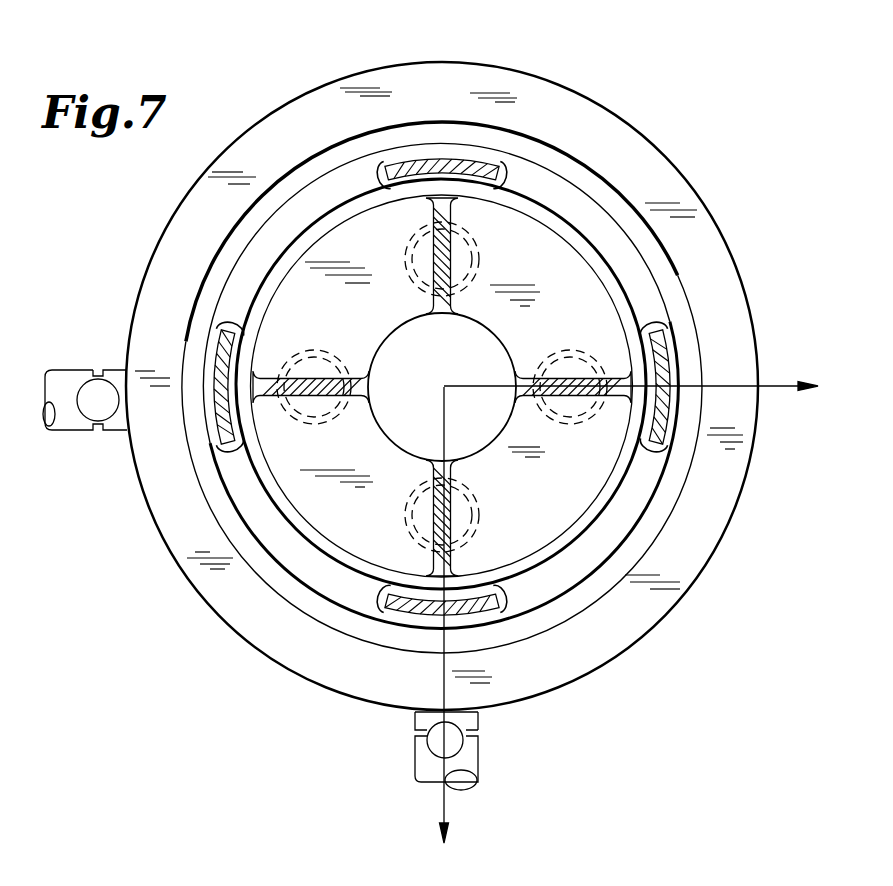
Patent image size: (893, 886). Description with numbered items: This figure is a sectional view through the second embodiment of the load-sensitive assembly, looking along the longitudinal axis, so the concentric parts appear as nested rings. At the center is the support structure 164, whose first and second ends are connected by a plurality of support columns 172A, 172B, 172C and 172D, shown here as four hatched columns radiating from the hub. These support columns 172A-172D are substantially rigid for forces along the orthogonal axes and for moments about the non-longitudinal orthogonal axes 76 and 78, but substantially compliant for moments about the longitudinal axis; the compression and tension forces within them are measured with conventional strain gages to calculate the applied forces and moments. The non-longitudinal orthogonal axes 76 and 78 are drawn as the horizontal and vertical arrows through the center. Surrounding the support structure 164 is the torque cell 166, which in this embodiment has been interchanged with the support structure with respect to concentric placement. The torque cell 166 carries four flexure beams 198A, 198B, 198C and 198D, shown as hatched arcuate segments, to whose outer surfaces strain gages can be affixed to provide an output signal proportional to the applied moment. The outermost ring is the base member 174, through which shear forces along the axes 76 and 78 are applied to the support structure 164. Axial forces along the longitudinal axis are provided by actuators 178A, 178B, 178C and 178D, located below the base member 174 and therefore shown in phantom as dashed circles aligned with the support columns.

The base member 174 is at (442, 369).
The torque cell 166 is at (442, 356).
The support structure 164 is at (583, 237).
The support column 172A is at (201, 322).
The support column 172B is at (366, 611).
The support column 172C is at (666, 457).
The support column 172D is at (502, 162).
The flexure beam 198A is at (134, 429).
The flexure beam 198B is at (495, 671).
The flexure beam 198C is at (736, 357).
The flexure beam 198D is at (442, 94).
The actuator 178A is at (219, 290).
The actuator 178B is at (320, 605).
The actuator 178C is at (665, 297).
The actuator 178D is at (533, 172).
The non-longitudinal orthogonal axis 76 is at (631, 360).
The non-longitudinal orthogonal axis 78 is at (450, 808).